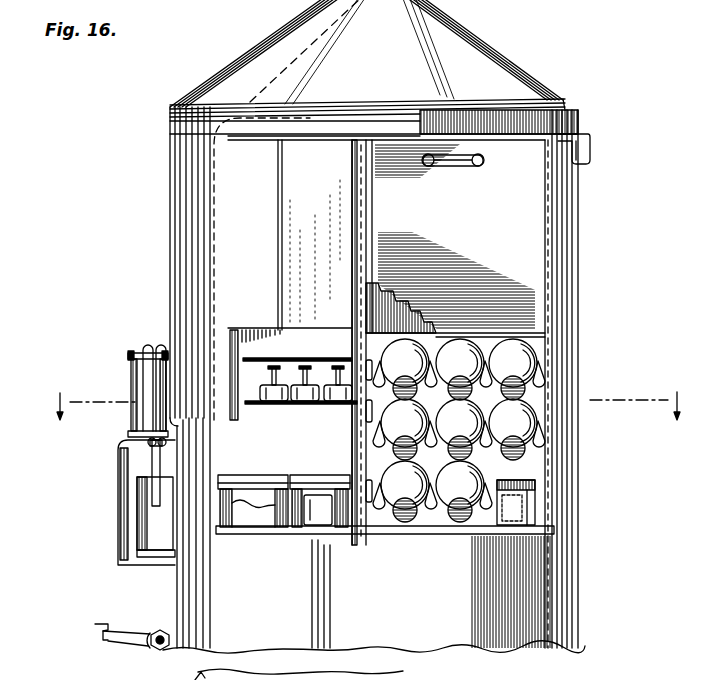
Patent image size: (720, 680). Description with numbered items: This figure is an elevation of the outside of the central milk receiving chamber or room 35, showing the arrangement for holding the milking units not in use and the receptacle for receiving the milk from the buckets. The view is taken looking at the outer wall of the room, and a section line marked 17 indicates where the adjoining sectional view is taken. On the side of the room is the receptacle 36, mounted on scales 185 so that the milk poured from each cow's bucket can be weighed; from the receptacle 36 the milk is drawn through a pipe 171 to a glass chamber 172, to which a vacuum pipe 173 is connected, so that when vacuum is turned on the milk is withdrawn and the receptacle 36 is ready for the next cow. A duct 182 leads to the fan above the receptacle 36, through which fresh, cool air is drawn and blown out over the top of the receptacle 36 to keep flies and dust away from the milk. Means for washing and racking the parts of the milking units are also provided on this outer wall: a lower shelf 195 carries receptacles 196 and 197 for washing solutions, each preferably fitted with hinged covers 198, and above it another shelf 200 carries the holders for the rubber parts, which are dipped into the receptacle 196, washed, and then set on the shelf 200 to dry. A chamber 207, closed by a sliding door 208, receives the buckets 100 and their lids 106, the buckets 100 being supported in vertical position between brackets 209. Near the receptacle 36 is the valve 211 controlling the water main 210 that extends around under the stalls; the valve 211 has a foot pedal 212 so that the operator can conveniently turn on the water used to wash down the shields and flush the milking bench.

The milk receiving chamber or room 35 is at (380, 82).
The duct 182 is at (190, 296).
The sliding door 208 is at (515, 245).
The chamber 207 is at (530, 336).
The bucket 100 is at (513, 414).
The brackets 209 is at (540, 438).
The lid 106 is at (370, 424).
The shelf 200 is at (276, 402).
The section line 17 is at (360, 406).
The glass chamber 172 is at (136, 383).
The vacuum pipe 173 is at (162, 401).
The pipe 171 is at (155, 457).
The scales 185 is at (143, 491).
The receptacle 36 is at (160, 529).
The hinged covers 198 is at (250, 492).
The receptacle 196 is at (256, 516).
The receptacle 197 is at (320, 518).
The shelf 195 is at (300, 536).
The valve 211 is at (162, 629).
The foot pedal 212 is at (100, 645).
The water main 210 is at (160, 651).